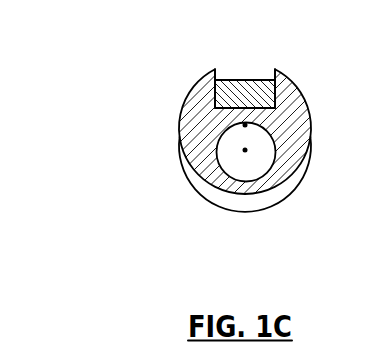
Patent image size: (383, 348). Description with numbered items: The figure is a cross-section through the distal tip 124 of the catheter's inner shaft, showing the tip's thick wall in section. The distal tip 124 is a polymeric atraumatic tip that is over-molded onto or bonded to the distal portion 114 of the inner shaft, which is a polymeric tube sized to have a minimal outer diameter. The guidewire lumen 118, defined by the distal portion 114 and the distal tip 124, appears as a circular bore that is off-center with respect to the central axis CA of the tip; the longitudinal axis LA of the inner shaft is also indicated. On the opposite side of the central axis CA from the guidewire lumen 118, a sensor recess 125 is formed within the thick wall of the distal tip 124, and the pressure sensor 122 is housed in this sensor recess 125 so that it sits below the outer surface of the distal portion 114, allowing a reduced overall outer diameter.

The distal portion 114 is at (295, 192).
The guidewire lumen 118 is at (242, 183).
The pressure sensor 122 is at (252, 80).
The distal tip 124 is at (178, 135).
The sensor recess 125 is at (214, 66).
The central axis CA is at (245, 125).
The longitudinal axis LA is at (245, 150).